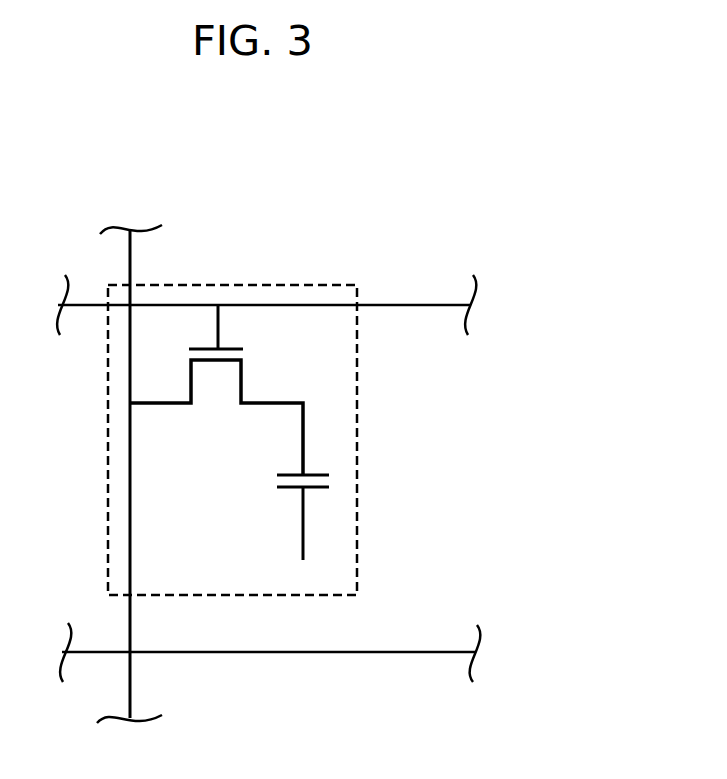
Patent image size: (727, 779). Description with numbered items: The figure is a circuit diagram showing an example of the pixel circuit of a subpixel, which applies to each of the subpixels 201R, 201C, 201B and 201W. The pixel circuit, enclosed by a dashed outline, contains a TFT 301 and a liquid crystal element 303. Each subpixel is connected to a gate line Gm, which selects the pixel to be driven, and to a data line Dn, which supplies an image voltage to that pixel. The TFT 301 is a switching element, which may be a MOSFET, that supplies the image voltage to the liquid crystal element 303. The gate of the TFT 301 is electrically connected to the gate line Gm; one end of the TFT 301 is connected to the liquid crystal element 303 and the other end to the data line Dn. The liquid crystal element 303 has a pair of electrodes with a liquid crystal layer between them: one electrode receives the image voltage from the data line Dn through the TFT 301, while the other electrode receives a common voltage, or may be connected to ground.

The subpixel 201R is at (314, 393).
The cyan pixel 201C is at (314, 393).
The subpixel 201B is at (314, 393).
The subpixel 201W is at (380, 220).
The TFT 301 is at (247, 349).
The liquid crystal element 303 is at (334, 480).
The data line Dn is at (128, 270).
The gate line Gm is at (387, 305).